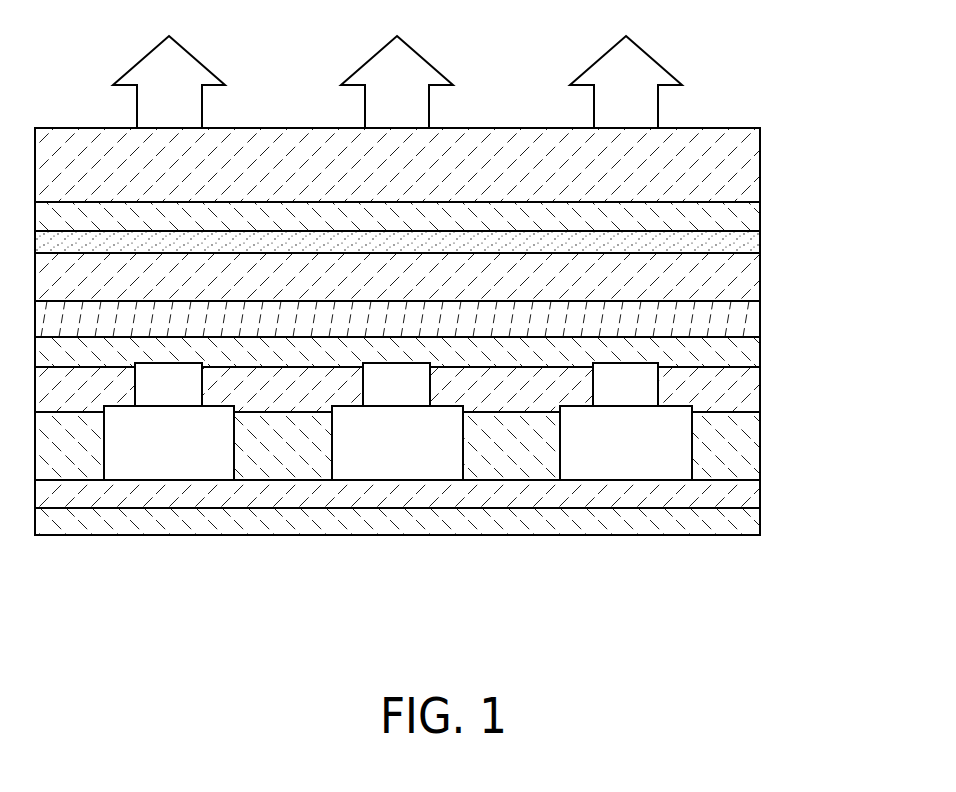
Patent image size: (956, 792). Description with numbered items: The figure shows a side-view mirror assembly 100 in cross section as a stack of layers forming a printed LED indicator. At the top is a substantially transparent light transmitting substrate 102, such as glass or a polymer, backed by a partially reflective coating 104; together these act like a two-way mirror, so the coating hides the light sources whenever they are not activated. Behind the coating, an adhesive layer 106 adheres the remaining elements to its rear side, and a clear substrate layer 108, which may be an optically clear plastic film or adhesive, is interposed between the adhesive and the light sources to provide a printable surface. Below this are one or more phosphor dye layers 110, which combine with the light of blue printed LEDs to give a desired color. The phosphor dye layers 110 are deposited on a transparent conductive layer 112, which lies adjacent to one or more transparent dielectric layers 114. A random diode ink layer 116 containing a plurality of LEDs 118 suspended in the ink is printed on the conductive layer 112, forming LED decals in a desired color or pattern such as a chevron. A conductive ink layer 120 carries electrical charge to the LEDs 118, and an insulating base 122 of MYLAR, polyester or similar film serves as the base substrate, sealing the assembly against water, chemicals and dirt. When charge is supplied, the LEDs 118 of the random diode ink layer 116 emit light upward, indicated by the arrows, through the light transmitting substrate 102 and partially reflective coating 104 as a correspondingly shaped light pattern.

The side-view mirror assembly 100 is at (756, 88).
The light transmitting substrate 102 is at (730, 162).
The partially reflective coating 104 is at (730, 212).
The adhesive layer 106 is at (730, 242).
The clear substrate layer 108 is at (730, 282).
The phosphor dye layers 110 is at (730, 317).
The transparent conductive layer 112 is at (730, 355).
The transparent dielectric layers 114 is at (730, 390).
The random diode ink layer 116 is at (730, 437).
The LEDs 118 is at (203, 470).
The conductive ink layer 120 is at (730, 495).
The insulating base 122 is at (730, 527).